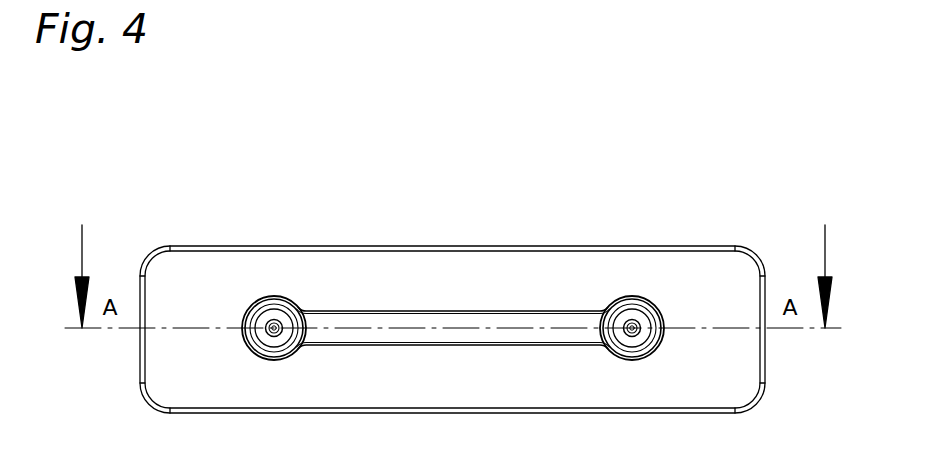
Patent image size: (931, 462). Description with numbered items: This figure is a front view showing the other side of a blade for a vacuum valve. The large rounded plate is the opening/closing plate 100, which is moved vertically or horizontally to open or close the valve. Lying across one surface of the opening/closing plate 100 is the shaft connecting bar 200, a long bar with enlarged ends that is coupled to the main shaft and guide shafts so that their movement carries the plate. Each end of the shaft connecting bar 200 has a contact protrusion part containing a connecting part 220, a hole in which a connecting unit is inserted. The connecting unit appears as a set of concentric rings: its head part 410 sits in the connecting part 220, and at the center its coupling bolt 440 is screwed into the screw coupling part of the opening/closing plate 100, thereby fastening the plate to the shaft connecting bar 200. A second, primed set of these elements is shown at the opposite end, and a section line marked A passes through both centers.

The opening/closing plate 100 is at (400, 280).
The shaft connecting bar 200 is at (455, 320).
The connecting part 220 is at (243, 310).
The head part 410 is at (268, 315).
The coupling bolt 440 is at (277, 322).